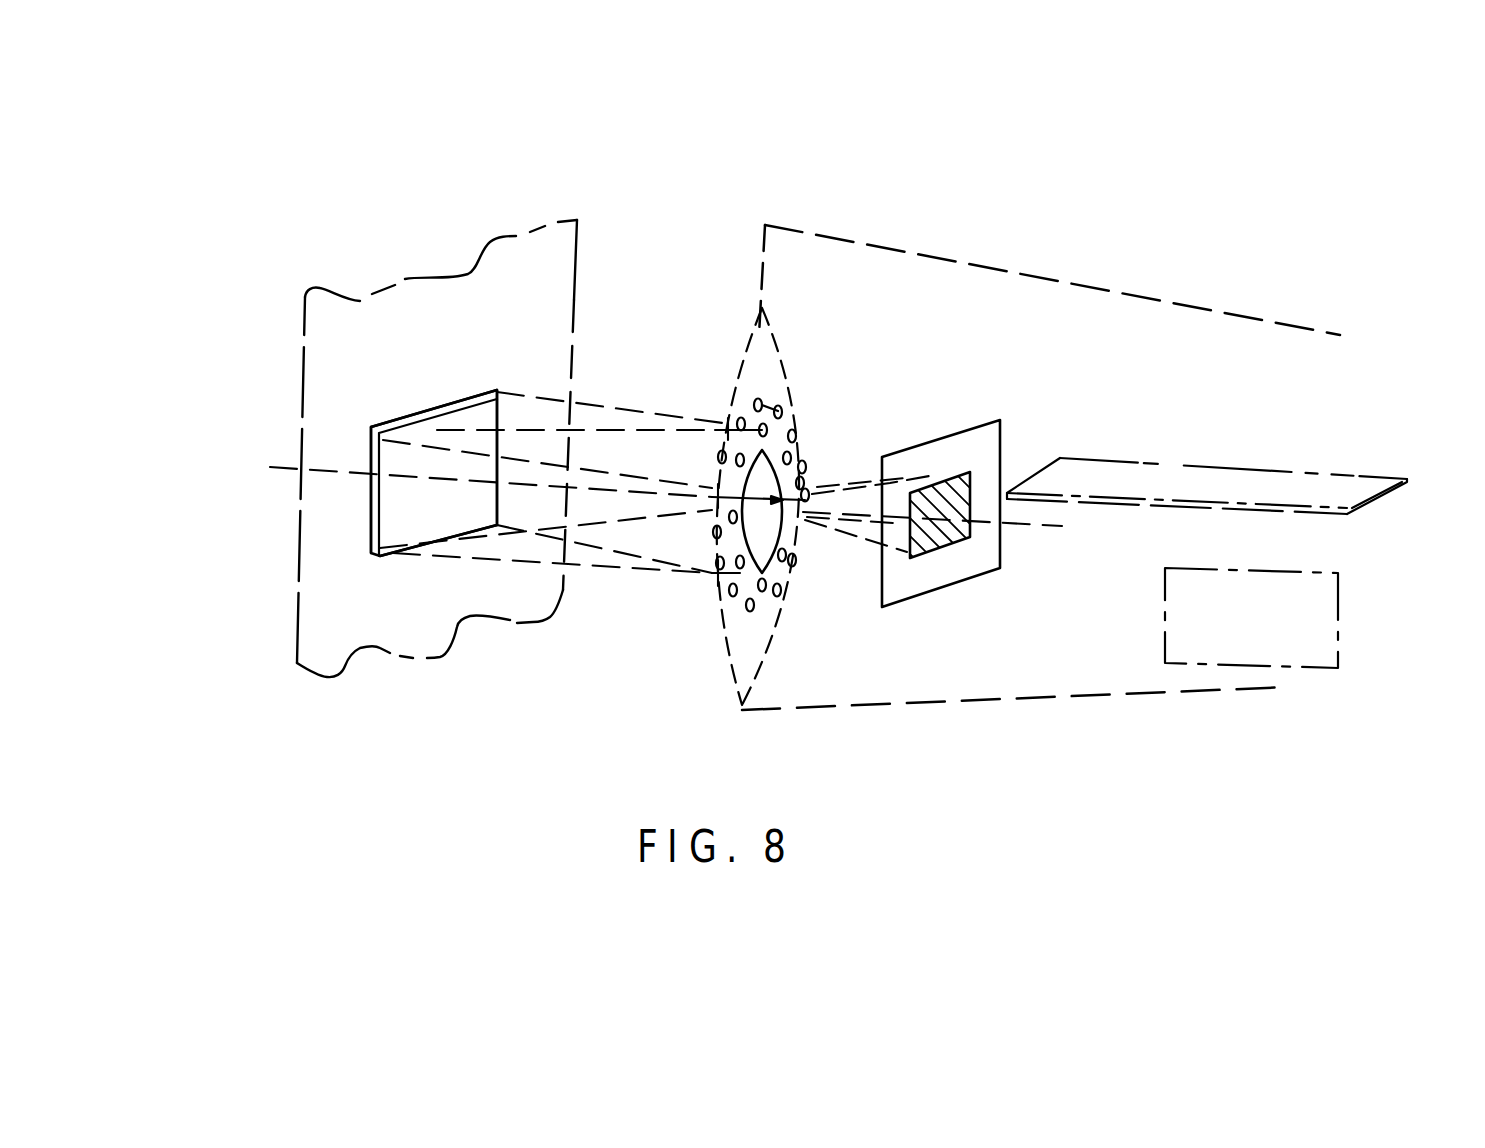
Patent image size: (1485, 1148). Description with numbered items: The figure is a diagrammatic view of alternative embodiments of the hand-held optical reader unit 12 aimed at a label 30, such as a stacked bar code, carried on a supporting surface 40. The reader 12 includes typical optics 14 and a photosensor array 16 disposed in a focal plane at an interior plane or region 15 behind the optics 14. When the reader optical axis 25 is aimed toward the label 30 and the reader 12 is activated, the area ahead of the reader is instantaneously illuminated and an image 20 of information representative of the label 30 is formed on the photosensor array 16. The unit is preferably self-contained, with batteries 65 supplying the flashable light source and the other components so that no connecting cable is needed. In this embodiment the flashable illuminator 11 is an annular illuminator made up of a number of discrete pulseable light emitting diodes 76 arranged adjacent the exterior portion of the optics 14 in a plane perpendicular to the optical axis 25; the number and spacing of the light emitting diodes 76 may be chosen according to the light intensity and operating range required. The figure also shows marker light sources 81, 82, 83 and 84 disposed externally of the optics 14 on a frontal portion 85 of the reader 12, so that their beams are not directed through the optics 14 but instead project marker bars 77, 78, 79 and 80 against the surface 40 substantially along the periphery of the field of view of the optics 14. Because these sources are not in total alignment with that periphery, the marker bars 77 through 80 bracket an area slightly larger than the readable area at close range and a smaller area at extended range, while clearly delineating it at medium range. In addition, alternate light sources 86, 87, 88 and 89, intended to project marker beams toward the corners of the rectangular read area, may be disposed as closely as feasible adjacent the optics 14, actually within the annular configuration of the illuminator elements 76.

The annular illuminator 11 is at (743, 463).
The hand-held optical reader unit 12 is at (1090, 698).
The optics 14 is at (778, 410).
The interior plane or region 15 is at (965, 609).
The photosensor array 16 is at (963, 430).
The image 20 is at (970, 487).
The reader optical axis 25 is at (327, 473).
The label 30 is at (373, 517).
The supporting surface 40 is at (377, 633).
The batteries 65 is at (1312, 622).
The light emitting diodes 76 is at (740, 417).
The marker bar 77 is at (413, 404).
The marker bar 78 is at (505, 440).
The marker bar 79 is at (452, 537).
The marker bar 80 is at (370, 455).
The marker light source 81 is at (764, 423).
The marker light source 82 is at (803, 483).
The marker light source 83 is at (757, 597).
The marker light source 84 is at (733, 513).
The frontal portion 85 is at (754, 328).
The alternate light source 86 is at (717, 468).
The alternate light source 87 is at (803, 458).
The alternate light source 88 is at (793, 550).
The alternate light source 89 is at (733, 583).